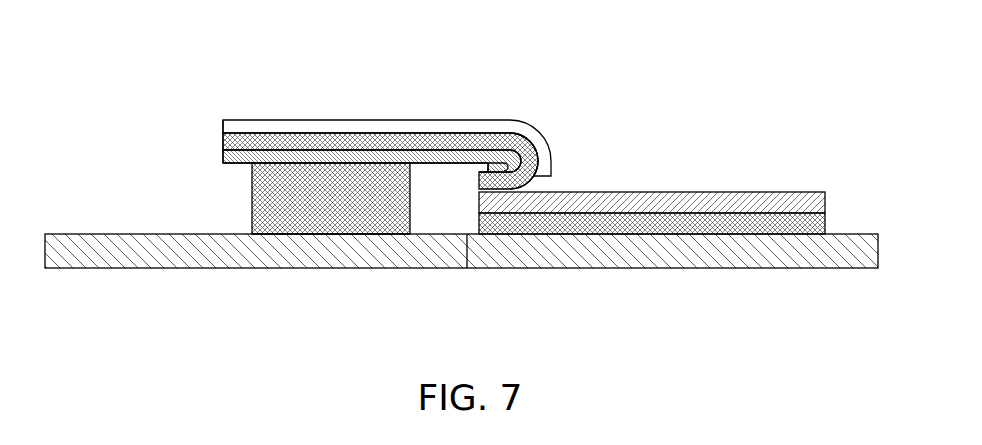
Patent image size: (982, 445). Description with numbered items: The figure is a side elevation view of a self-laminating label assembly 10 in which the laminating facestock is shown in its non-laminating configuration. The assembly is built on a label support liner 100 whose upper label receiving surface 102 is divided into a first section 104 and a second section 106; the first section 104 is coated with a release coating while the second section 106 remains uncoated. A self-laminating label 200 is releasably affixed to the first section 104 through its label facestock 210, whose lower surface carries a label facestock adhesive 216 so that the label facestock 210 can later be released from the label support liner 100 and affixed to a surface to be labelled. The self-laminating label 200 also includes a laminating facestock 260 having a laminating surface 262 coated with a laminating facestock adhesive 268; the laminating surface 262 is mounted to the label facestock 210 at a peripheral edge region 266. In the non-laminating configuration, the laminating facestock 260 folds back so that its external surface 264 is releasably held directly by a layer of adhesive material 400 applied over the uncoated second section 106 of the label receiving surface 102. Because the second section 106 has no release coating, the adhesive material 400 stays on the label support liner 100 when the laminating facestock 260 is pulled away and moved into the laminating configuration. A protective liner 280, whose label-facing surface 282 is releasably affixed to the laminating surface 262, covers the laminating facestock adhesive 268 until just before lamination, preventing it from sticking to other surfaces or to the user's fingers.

The self-laminating label assembly 10 is at (461, 194).
The label support liner 100 is at (461, 271).
The label receiving surface 102 is at (317, 236).
The first section 104 is at (523, 253).
The second section 106 is at (396, 255).
The self-laminating label 200 is at (523, 174).
The label facestock 210 is at (805, 205).
The label facestock adhesive 216 is at (792, 222).
The laminating facestock 260 is at (337, 148).
The laminating surface 262 is at (417, 160).
The external surface 264 is at (268, 163).
The peripheral edge region 266 is at (480, 174).
The laminating facestock adhesive 268 is at (249, 143).
The protective liner 280 is at (540, 152).
The label-facing surface 282 is at (484, 130).
The adhesive material 400 is at (367, 205).